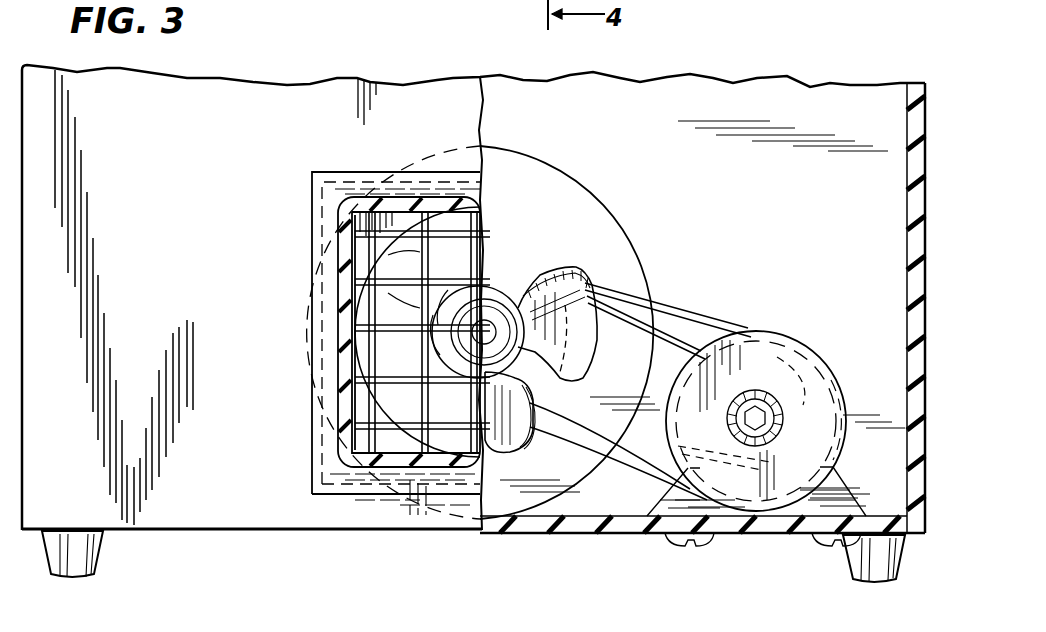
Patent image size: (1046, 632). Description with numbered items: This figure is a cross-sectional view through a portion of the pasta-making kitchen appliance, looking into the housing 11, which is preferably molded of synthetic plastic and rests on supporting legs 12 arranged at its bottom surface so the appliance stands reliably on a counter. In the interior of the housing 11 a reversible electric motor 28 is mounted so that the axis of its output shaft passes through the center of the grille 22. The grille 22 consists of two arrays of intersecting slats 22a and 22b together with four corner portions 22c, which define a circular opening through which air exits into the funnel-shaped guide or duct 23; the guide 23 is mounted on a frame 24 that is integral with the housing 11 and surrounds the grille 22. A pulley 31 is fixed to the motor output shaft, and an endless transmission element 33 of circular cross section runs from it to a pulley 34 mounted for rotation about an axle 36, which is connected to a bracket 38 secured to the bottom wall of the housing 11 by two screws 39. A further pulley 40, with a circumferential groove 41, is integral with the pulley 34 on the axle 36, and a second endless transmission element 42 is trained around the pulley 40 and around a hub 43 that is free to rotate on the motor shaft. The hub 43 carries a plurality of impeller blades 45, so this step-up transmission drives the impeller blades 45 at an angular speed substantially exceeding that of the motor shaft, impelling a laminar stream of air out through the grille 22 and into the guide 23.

The housing 11 is at (926, 83).
The legs 12 is at (102, 553).
The grille 22 is at (361, 299).
The slats 22a is at (403, 281).
The slats 22b is at (378, 305).
The corner portions 22c is at (373, 212).
The guide 23 is at (345, 328).
The frame 24 is at (312, 186).
The motor 28 is at (560, 150).
The pulley 31 is at (512, 268).
The endless transmission element 33 is at (622, 290).
The pulley 34 is at (797, 331).
The axle 36 is at (752, 402).
The bracket 38 is at (838, 482).
The screws 39 is at (665, 541).
The further pulley 40 is at (817, 357).
The circumferential groove 41 is at (833, 367).
The endless transmission element 42 is at (712, 322).
The hub 43 is at (530, 273).
The impeller blades 45 is at (522, 440).